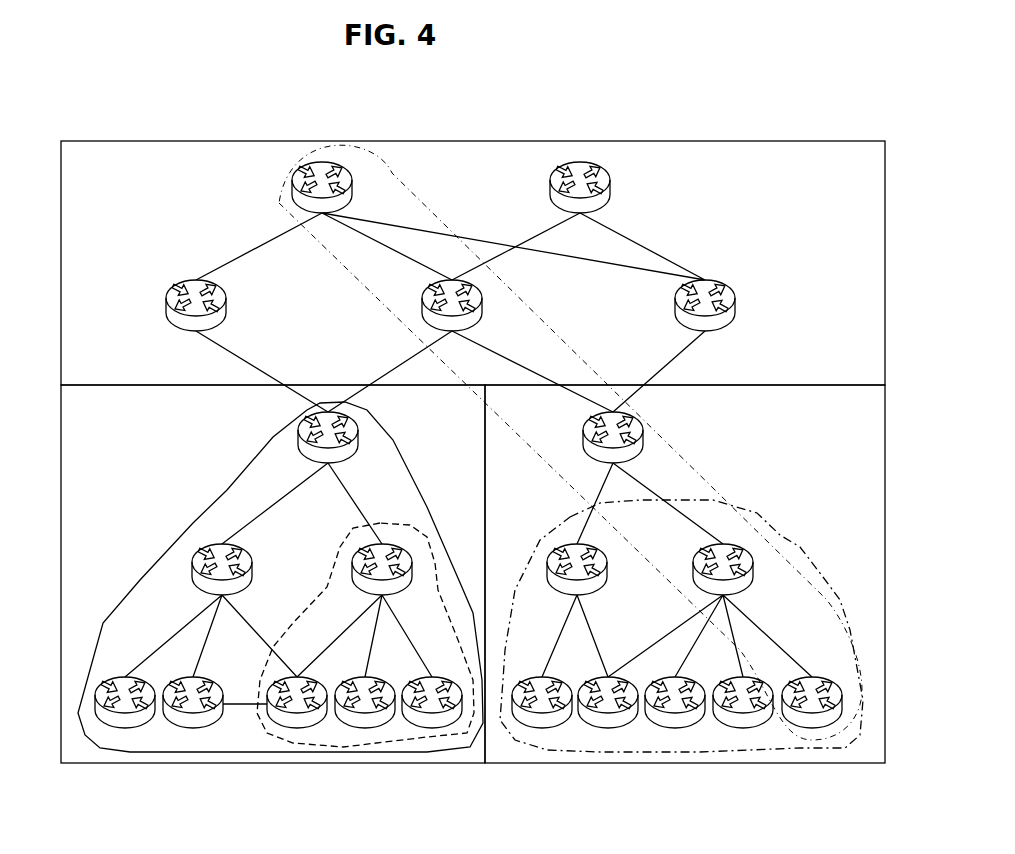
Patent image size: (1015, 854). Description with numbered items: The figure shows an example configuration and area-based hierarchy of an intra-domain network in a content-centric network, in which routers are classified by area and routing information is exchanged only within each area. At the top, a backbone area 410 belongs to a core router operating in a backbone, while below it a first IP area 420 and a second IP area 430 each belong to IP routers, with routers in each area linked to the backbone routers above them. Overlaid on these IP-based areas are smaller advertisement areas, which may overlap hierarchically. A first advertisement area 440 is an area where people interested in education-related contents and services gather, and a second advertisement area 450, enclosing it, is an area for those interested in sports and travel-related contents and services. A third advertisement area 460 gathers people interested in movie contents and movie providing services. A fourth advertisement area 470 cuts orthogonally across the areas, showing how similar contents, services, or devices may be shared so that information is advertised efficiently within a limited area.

The area 0 410 is at (473, 250).
The area 1 420 is at (273, 601).
The area 2 430 is at (747, 601).
The Ad-area 1 440 is at (333, 567).
The Ad-area 2 450 is at (277, 577).
The Ad-area 3 460 is at (783, 533).
The Ad-area 4 470 is at (398, 172).